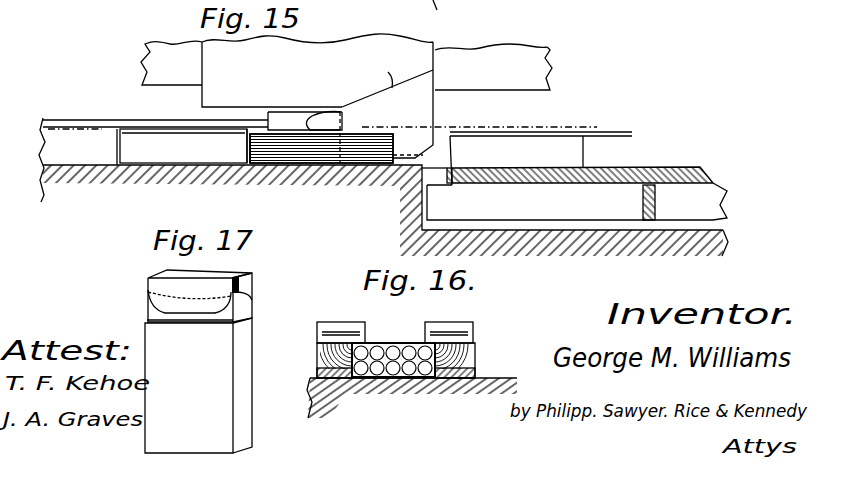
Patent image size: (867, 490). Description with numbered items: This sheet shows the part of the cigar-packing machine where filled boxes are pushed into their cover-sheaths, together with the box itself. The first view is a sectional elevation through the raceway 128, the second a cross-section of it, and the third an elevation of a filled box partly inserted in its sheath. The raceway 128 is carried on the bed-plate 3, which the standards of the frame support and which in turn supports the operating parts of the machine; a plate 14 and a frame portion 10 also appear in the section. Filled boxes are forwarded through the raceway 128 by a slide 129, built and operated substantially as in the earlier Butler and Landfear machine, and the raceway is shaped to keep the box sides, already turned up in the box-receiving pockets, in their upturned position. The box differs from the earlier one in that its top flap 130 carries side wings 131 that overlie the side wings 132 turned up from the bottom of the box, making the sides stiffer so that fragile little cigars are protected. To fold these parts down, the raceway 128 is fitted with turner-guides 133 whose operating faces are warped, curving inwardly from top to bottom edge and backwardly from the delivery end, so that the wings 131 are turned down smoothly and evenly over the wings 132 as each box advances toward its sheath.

In FIG. 15, the bed-plate 3 is at (385, 210).
In FIG. 16, the bed-plate 3 is at (412, 398).
In FIG. 15, the machine frame 10 is at (347, 5).
In FIG. 15, the plate 14 is at (80, 131).
In FIG. 15, the raceway 128 is at (163, 147).
In FIG. 16, the raceway 128 is at (414, 378).
In FIG. 15, the slide 129 is at (387, 100).
In FIG. 15, the top flap 130 is at (293, 150).
In FIG. 17, the top flap 130 is at (230, 320).
In FIG. 16, the top flap 130 is at (405, 337).
In FIG. 17, the side wings 131 is at (250, 306).
In FIG. 16, the side wings 131 is at (350, 363).
In FIG. 17, the side wings 132 is at (247, 286).
In FIG. 15, the turner-guides 133 is at (285, 120).
In FIG. 16, the turner-guides 133 is at (336, 358).